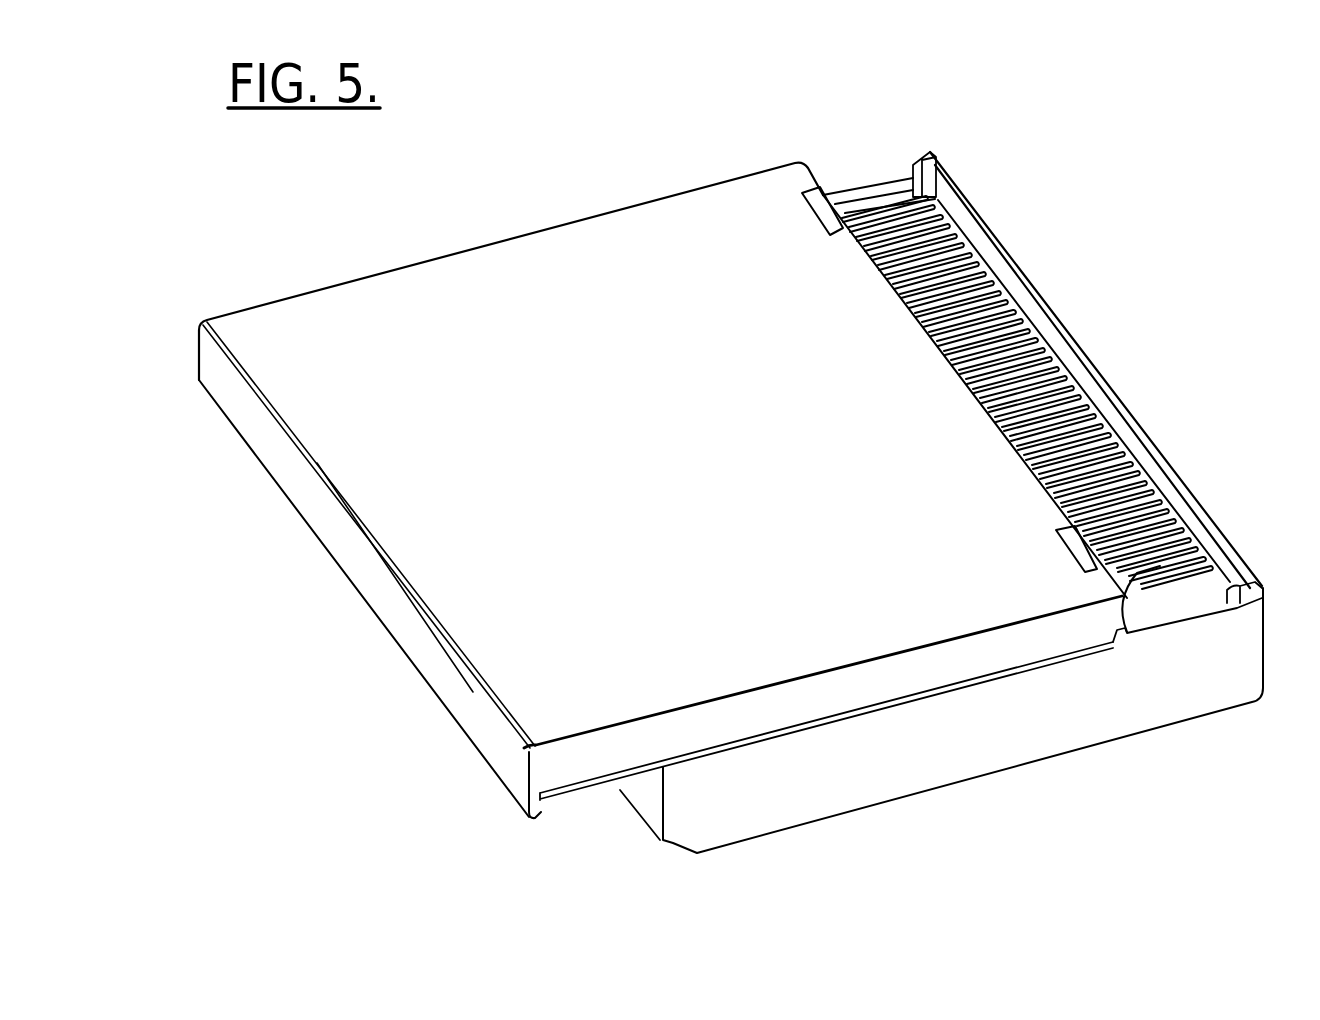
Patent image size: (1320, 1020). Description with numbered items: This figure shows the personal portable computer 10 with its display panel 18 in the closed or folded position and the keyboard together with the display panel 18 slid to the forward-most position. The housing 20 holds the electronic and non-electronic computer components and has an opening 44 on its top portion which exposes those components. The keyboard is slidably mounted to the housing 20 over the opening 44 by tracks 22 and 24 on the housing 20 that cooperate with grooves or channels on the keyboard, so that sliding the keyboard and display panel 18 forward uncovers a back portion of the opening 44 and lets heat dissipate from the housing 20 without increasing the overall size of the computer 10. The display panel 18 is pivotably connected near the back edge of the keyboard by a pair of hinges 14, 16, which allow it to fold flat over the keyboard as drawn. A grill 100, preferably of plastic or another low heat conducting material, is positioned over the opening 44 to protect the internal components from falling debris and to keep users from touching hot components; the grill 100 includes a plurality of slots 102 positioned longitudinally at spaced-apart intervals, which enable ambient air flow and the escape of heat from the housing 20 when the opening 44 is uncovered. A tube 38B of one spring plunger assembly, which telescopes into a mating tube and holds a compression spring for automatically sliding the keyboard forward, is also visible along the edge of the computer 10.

The personal portable computer 10 is at (432, 747).
The hinge 14 is at (832, 198).
The hinge 16 is at (1080, 543).
The display panel 18 is at (557, 224).
The housing 20 is at (947, 787).
The track 22 is at (1230, 583).
The track 24 is at (893, 192).
The tube 38B is at (953, 195).
The opening 44 is at (1090, 390).
The grill 100 is at (973, 260).
The slots 102 is at (998, 300).